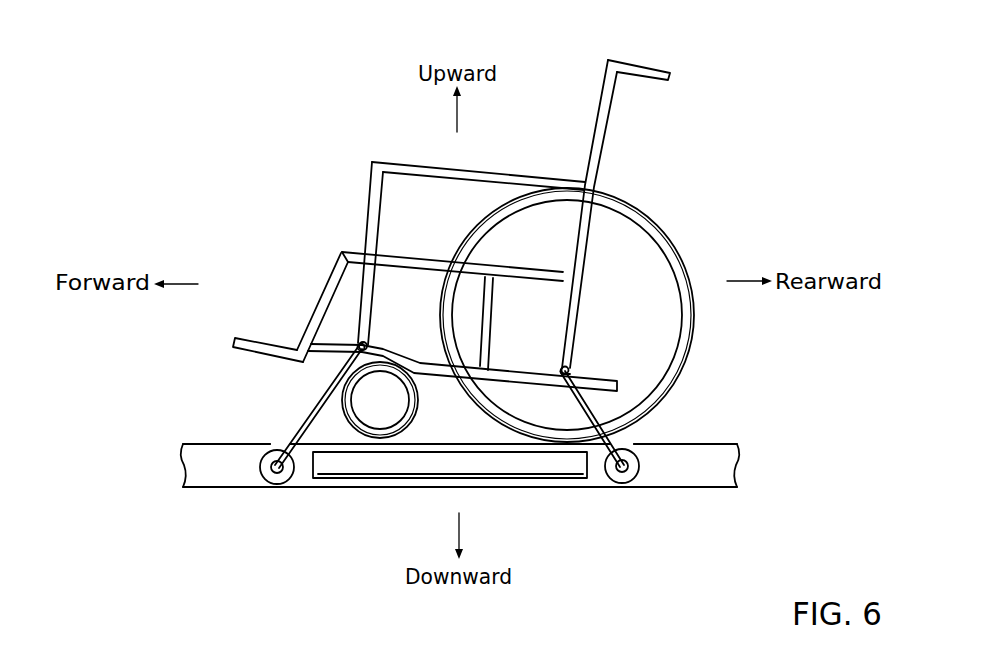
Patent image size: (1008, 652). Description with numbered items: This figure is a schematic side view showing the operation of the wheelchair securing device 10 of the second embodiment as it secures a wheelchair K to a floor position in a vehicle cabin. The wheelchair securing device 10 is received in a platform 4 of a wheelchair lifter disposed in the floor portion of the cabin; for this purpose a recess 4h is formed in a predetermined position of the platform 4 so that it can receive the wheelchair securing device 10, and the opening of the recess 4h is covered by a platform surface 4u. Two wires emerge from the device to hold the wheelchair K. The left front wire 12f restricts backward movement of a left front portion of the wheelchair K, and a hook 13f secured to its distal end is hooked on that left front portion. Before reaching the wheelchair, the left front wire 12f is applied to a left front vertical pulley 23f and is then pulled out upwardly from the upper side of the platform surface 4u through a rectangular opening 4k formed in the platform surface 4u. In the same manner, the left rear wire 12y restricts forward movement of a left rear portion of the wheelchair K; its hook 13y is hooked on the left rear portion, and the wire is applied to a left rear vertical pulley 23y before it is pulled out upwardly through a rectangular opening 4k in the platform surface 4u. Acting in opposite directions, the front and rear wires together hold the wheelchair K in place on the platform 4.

The wheelchair K is at (663, 126).
The platform 4 is at (200, 432).
The rectangular opening 4k is at (273, 444).
The platform surface 4u is at (697, 443).
The recess 4h is at (688, 476).
The wheelchair securing device 10 is at (415, 474).
The left front wire 12f is at (318, 395).
The left rear wire 12y is at (592, 400).
The hook 13f is at (357, 343).
The hook 13y is at (567, 367).
The left front vertical pulley 23f is at (261, 481).
The left rear vertical pulley 23y is at (639, 482).